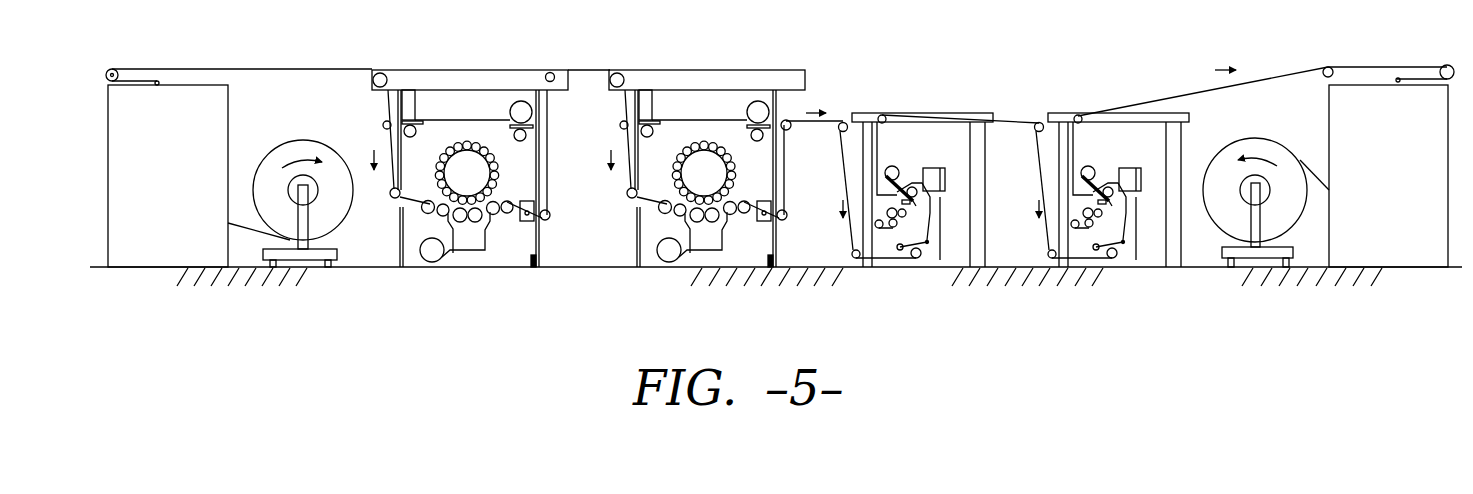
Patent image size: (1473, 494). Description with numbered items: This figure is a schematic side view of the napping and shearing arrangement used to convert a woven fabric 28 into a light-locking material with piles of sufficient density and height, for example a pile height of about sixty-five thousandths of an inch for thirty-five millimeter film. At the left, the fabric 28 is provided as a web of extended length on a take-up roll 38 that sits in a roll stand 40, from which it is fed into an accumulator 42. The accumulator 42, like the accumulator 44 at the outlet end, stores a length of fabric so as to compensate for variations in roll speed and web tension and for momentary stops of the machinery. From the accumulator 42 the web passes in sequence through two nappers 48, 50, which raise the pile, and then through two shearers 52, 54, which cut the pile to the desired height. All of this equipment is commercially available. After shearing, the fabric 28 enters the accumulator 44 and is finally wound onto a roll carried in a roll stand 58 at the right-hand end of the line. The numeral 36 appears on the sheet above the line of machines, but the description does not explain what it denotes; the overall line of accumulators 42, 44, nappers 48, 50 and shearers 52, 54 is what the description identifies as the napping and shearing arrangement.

The fabric 28 is at (253, 68).
The printing system 36 is at (873, 58).
The take-up roll 38 is at (287, 141).
The roll stand 40 is at (337, 254).
The accumulator 42 is at (150, 178).
The accumulator 44 is at (1368, 178).
The napper 48 is at (471, 67).
The napper 50 is at (681, 68).
The shearer 52 is at (925, 112).
The shearer 54 is at (1115, 112).
The roll stand 58 is at (1227, 253).